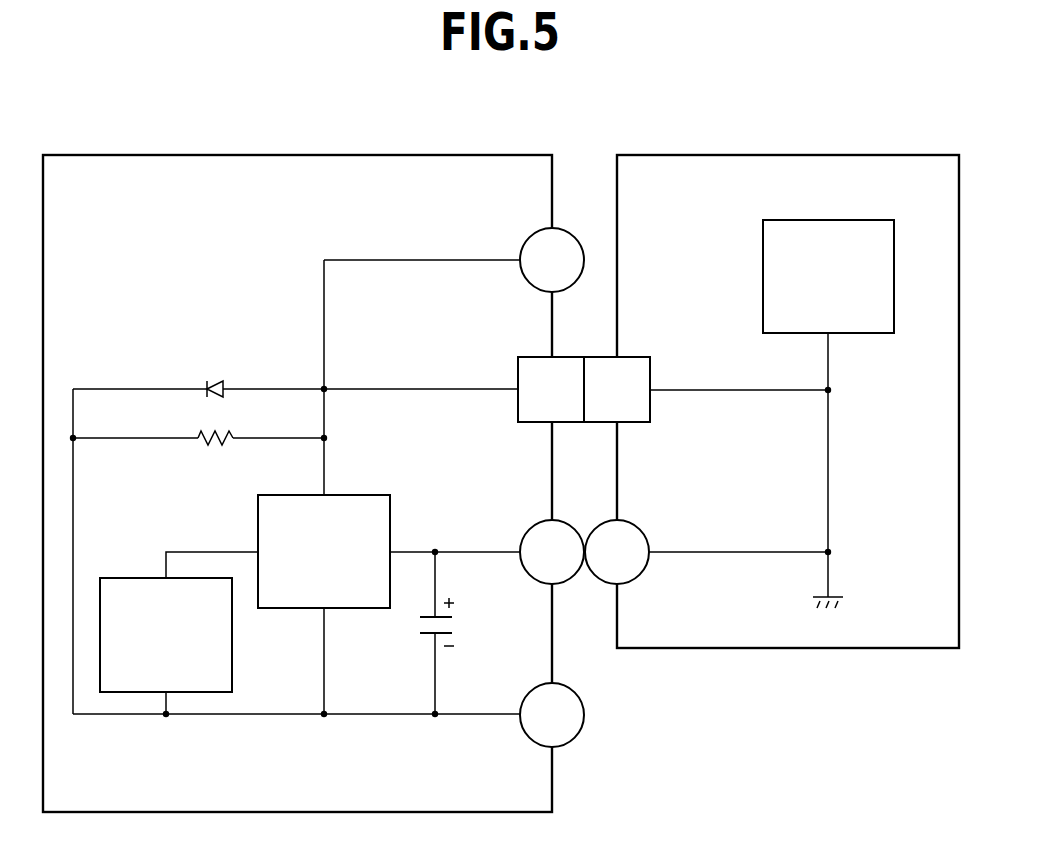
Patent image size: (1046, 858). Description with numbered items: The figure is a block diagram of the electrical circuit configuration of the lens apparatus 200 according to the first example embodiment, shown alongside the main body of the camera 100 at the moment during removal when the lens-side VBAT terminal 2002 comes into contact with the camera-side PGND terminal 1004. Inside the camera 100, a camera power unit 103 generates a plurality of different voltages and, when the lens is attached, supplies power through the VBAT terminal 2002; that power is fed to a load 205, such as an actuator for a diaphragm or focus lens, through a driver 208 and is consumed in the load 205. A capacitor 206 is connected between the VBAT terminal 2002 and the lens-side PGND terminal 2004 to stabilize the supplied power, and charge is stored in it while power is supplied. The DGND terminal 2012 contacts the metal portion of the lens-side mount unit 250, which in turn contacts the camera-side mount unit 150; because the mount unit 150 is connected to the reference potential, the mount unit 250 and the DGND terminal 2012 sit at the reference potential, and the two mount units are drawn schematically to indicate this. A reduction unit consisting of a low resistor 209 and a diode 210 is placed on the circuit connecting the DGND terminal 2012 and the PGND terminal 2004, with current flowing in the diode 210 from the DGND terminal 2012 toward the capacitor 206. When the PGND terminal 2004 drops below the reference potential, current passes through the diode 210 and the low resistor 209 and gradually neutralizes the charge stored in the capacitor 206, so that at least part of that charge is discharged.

The lens apparatus 200 is at (298, 155).
The camera 100 is at (788, 155).
The camera power unit 103 is at (763, 277).
The DGND terminal 2012 is at (528, 285).
The diode 210 is at (216, 385).
The low resistor 209 is at (217, 446).
The mount unit 250 is at (518, 412).
The mount unit 150 is at (650, 406).
The driver 208 is at (352, 495).
The load 205 is at (132, 578).
The VBAT terminal 2002 is at (530, 588).
The PGND terminal 1004 is at (639, 588).
The capacitor 206 is at (425, 638).
The PGND terminal 2004 is at (526, 741).